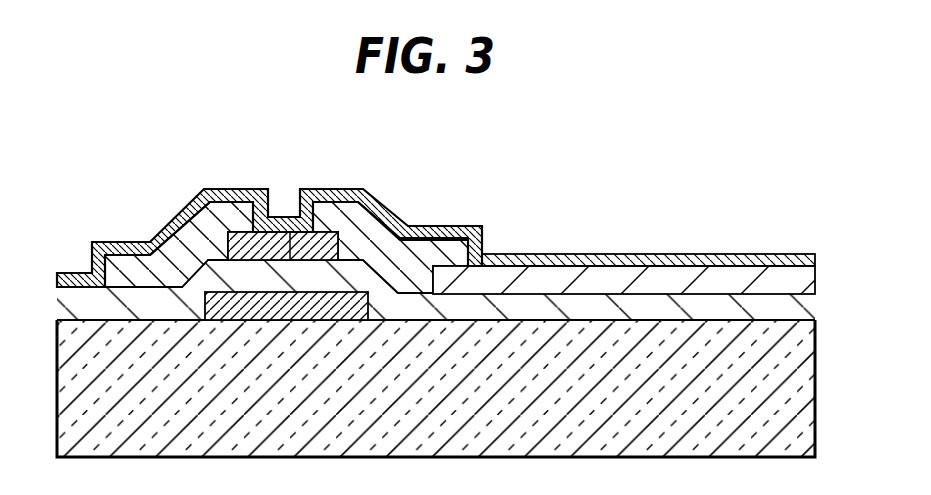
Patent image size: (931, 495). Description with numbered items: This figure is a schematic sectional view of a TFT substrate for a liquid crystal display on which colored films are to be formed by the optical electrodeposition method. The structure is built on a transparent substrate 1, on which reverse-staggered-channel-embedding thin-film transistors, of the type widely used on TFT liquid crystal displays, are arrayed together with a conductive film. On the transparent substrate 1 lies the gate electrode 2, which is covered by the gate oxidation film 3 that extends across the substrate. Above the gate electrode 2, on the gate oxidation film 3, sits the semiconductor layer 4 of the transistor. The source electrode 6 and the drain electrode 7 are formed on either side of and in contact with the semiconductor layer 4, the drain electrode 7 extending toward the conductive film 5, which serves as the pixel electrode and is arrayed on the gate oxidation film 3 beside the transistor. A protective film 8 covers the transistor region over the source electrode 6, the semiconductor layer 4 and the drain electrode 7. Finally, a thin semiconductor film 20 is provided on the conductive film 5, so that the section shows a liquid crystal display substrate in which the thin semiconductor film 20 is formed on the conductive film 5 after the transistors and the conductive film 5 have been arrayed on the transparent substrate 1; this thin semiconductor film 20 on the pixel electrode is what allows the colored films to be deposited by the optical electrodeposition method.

The transparent substrate 1 is at (812, 383).
The gate electrode 2 is at (262, 314).
The gate oxidation film 3 is at (811, 308).
The semiconductor layer 4 is at (290, 219).
The conductive film (pixel electrode) 5 is at (808, 282).
The source electrode 6 is at (188, 238).
The drain electrode 7 is at (368, 232).
The protective film 8 is at (338, 192).
The thin semiconductor film 20 is at (772, 258).